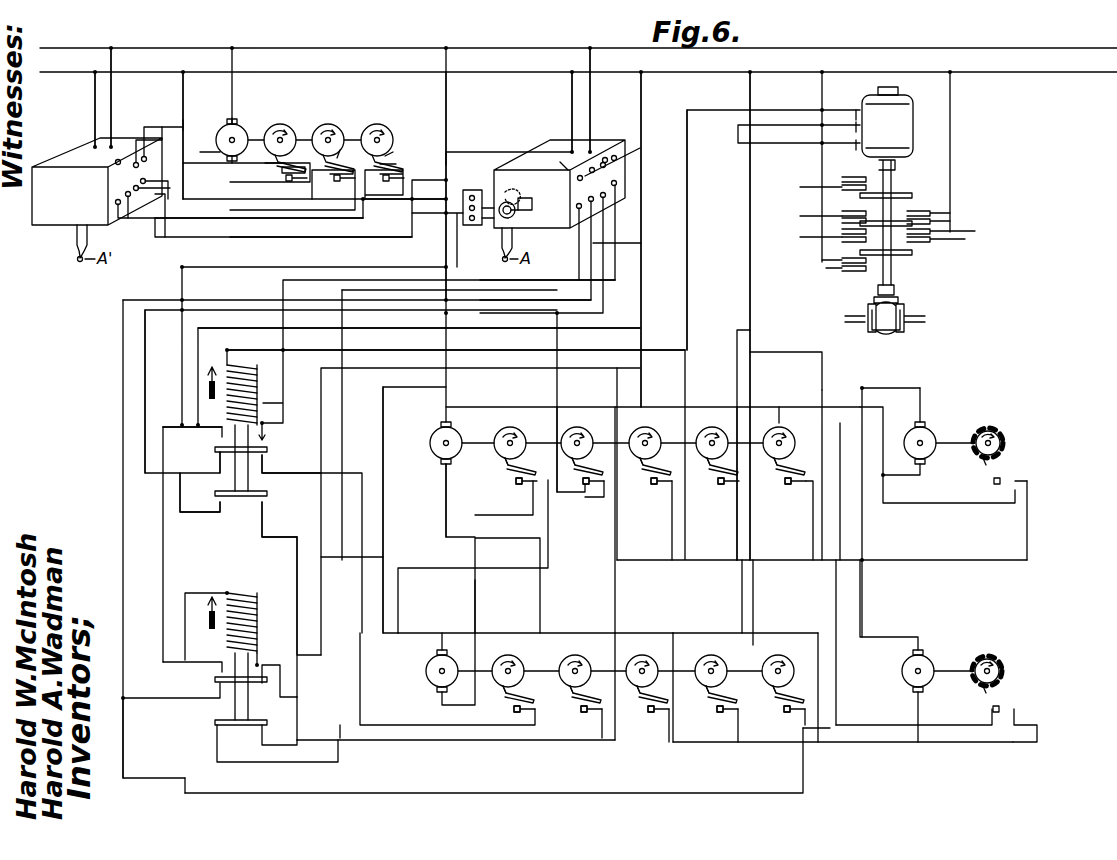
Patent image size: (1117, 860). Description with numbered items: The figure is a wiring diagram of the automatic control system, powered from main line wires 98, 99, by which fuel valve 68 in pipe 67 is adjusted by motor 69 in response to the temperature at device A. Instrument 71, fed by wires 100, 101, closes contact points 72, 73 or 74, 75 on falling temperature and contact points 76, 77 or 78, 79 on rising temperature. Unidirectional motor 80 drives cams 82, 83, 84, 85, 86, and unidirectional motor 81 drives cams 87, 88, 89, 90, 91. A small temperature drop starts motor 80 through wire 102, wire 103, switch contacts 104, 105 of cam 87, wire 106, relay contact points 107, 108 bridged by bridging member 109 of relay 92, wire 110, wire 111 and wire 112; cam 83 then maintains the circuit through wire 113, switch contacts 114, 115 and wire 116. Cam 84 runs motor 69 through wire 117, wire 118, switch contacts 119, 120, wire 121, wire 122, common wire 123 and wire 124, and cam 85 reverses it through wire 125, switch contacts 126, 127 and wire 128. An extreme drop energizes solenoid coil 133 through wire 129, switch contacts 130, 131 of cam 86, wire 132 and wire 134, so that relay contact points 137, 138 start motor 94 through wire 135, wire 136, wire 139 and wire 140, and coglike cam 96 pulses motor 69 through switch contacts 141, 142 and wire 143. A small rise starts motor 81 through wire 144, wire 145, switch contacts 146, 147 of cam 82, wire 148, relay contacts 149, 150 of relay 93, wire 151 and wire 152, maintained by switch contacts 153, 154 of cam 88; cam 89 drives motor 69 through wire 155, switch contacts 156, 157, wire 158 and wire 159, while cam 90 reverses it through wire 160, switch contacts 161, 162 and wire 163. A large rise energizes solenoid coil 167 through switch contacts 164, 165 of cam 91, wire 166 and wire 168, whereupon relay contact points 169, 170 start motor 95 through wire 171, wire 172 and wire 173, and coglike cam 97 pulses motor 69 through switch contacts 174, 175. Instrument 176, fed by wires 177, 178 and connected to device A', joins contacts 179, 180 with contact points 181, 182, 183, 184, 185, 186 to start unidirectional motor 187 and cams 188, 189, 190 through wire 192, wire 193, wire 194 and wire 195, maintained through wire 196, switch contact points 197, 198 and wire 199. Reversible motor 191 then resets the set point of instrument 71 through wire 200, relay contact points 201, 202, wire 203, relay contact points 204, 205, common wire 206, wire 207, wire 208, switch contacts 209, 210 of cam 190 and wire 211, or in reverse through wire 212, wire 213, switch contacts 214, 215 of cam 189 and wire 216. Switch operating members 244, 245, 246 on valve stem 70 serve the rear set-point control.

The main line wire 98 is at (46, 48).
The main line wire 99 is at (42, 72).
The instrument 176 is at (62, 154).
The wire 177 is at (92, 108).
The wire 178 is at (111, 96).
The contact 179 is at (136, 163).
The contact 180 is at (130, 186).
The contact point 181 is at (147, 157).
The contact point 182 is at (168, 170).
The contact point 183 is at (170, 182).
The contact point 184 is at (118, 160).
The contact point 185 is at (125, 192).
The contact point 186 is at (114, 206).
The unidirectional motor 187 is at (222, 125).
The cam 188 is at (278, 124).
The cam 189 is at (321, 122).
The cam 190 is at (380, 124).
The reversible motor 191 is at (468, 224).
The wire 192 is at (242, 82).
The wire 193 is at (200, 152).
The wire 194 is at (183, 110).
The wire 195 is at (183, 82).
The wire 196 is at (238, 188).
The switch contact point 197 is at (276, 172).
The switch contact point 198 is at (276, 162).
The wire 199 is at (258, 220).
The wire 200 is at (410, 253).
The common wire 206 is at (456, 267).
The wire 207 is at (412, 234).
The wire 208 is at (155, 238).
The switch contact 209 is at (388, 152).
The switch contact 210 is at (389, 162).
The wire 211 is at (380, 174).
The wire 212 is at (369, 200).
The wire 213 is at (298, 222).
The switch contact 214 is at (346, 158).
The switch contact 215 is at (330, 174).
The wire 216 is at (175, 220).
The wire 102 is at (448, 106).
The instrument 71 is at (523, 151).
The contact point 78 is at (570, 164).
The wire 101 is at (572, 94).
The wire 100 is at (594, 96).
The contact point 72 is at (610, 146).
The contact point 76 is at (601, 164).
The wire 112 is at (641, 96).
The wire 111 is at (628, 142).
The contact point 74 is at (624, 155).
The contact point 75 is at (620, 182).
The contact point 77 is at (591, 196).
The contact point 79 is at (576, 206).
The contact point 73 is at (606, 196).
The wire 152 is at (593, 243).
The wire 134 is at (615, 280).
The wire 124 is at (746, 94).
The wire 122 is at (688, 152).
The common wire 123 is at (749, 124).
The wire 128 is at (737, 330).
The motor 69 is at (884, 122).
The valve stem 70 is at (892, 268).
The switch operating member 245 is at (898, 192).
The switch operating member 244 is at (895, 214).
The switch operating member 246 is at (914, 250).
The pipe 67 is at (910, 304).
The valve 68 is at (886, 328).
The wire 110 is at (144, 410).
The wire 135 is at (365, 328).
The wire 132 is at (365, 345).
The wire 136 is at (160, 443).
The relay contact point 137 is at (220, 444).
The relay contact point 108 is at (218, 464).
The relay 92 is at (247, 385).
The solenoid coil 133 is at (257, 386).
The relay contact point 138 is at (262, 445).
The bridging member 109 is at (265, 460).
The relay contact point 107 is at (264, 462).
The relay contact point 205 is at (218, 503).
The relay contact point 204 is at (263, 502).
The wire 203 is at (297, 555).
The relay 93 is at (229, 618).
The solenoid coil 167 is at (239, 612).
The relay contact point 170 is at (258, 662).
The relay contact point 169 is at (221, 662).
The relay contact 150 is at (216, 686).
The wire 151 is at (130, 698).
The relay contact 149 is at (262, 688).
The relay contact point 201 is at (217, 735).
The relay contact point 202 is at (260, 726).
The wire 139 is at (470, 408).
The wire 113 is at (558, 390).
The unidirectional motor 80 is at (428, 438).
The cam 82 is at (496, 434).
The cam 83 is at (578, 434).
The cam 84 is at (642, 434).
The cam 85 is at (730, 436).
The cam 86 is at (783, 428).
The motor 94 is at (926, 440).
The coglike cam 96 is at (998, 438).
The switch contact 147 is at (502, 474).
The switch contact 146 is at (500, 486).
The wire 103 is at (442, 491).
The wire 116 is at (576, 466).
The switch contact 115 is at (572, 480).
The switch contact 114 is at (590, 492).
The wire 121 is at (626, 474).
The switch contact 120 is at (642, 470).
The switch contact 119 is at (648, 480).
The switch contact 127 is at (719, 470).
The switch contact 126 is at (722, 482).
The switch contact 131 is at (776, 472).
The switch contact 130 is at (780, 488).
The wire 125 is at (740, 520).
The wire 118 is at (670, 562).
The wire 129 is at (815, 570).
The wire 140 is at (886, 481).
The switch contact 142 is at (976, 473).
The switch contact 141 is at (992, 486).
The wire 143 is at (1028, 520).
The wire 117 is at (373, 519).
The wire 168 is at (382, 552).
The wire 148 is at (541, 549).
The wire 145 is at (470, 595).
The wire 144 is at (440, 635).
The unidirectional motor 81 is at (423, 674).
The cam 87 is at (504, 662).
The cam 88 is at (569, 660).
The cam 89 is at (628, 658).
The cam 90 is at (722, 656).
The cam 91 is at (796, 656).
The motor 95 is at (924, 649).
The coglike cam 97 is at (987, 654).
The wire 106 is at (424, 724).
The switch contact 104 is at (496, 692).
The switch contact 105 is at (507, 708).
The switch contact 154 is at (570, 690).
The switch contact 153 is at (582, 708).
The switch contact 157 is at (650, 694).
The switch contact 156 is at (654, 708).
The switch contact 162 is at (696, 721).
The switch contact 161 is at (702, 726).
The switch contact 164 is at (768, 706).
The switch contact 165 is at (782, 714).
The wire 158 is at (776, 738).
The wire 166 is at (808, 780).
The wire 171 is at (342, 738).
The wire 155 is at (684, 630).
The wire 163 is at (742, 598).
The wire 160 is at (752, 642).
The wire 159 is at (837, 648).
The wire 173 is at (862, 598).
The wire 172 is at (914, 684).
The switch contact 175 is at (1001, 692).
The switch contact 174 is at (1022, 710).